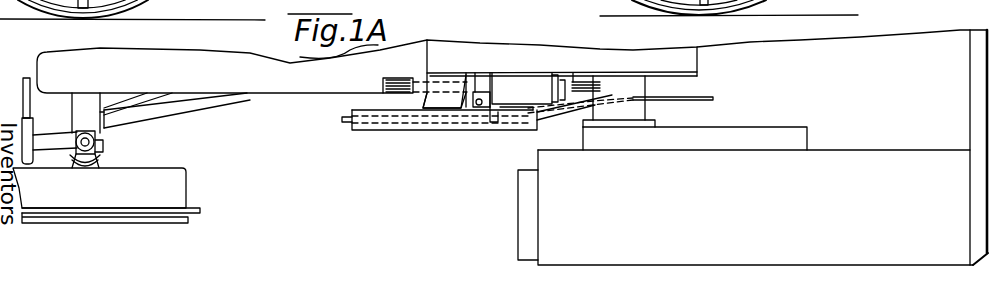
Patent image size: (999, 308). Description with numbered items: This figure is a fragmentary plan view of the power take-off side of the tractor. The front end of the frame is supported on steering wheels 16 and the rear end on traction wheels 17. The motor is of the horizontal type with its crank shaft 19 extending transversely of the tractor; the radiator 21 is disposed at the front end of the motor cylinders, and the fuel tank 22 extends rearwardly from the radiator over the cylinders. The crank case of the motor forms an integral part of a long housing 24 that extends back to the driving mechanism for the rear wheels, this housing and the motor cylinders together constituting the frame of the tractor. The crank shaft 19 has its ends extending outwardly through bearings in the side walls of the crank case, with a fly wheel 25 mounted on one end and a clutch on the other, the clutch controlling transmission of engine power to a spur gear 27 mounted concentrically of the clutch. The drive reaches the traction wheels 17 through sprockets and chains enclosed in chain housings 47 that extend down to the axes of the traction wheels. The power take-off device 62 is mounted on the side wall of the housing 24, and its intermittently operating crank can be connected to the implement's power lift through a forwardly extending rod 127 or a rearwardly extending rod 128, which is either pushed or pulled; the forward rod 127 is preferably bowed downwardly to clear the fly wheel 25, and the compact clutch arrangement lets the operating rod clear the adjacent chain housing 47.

The steering wheels 16 is at (187, 188).
The traction wheels 17 is at (518, 237).
The crank shaft 19 is at (445, 108).
The radiator 21 is at (38, 57).
The fuel tank 22 is at (260, 82).
The housing 24 is at (665, 62).
The fly wheel 25 is at (367, 128).
The spur gear 27 is at (437, 53).
The chain housings 47 is at (748, 138).
The power take-off device 62 is at (528, 73).
The forwardly extending rod 127 is at (350, 118).
The rearwardly extending rod 128 is at (713, 100).